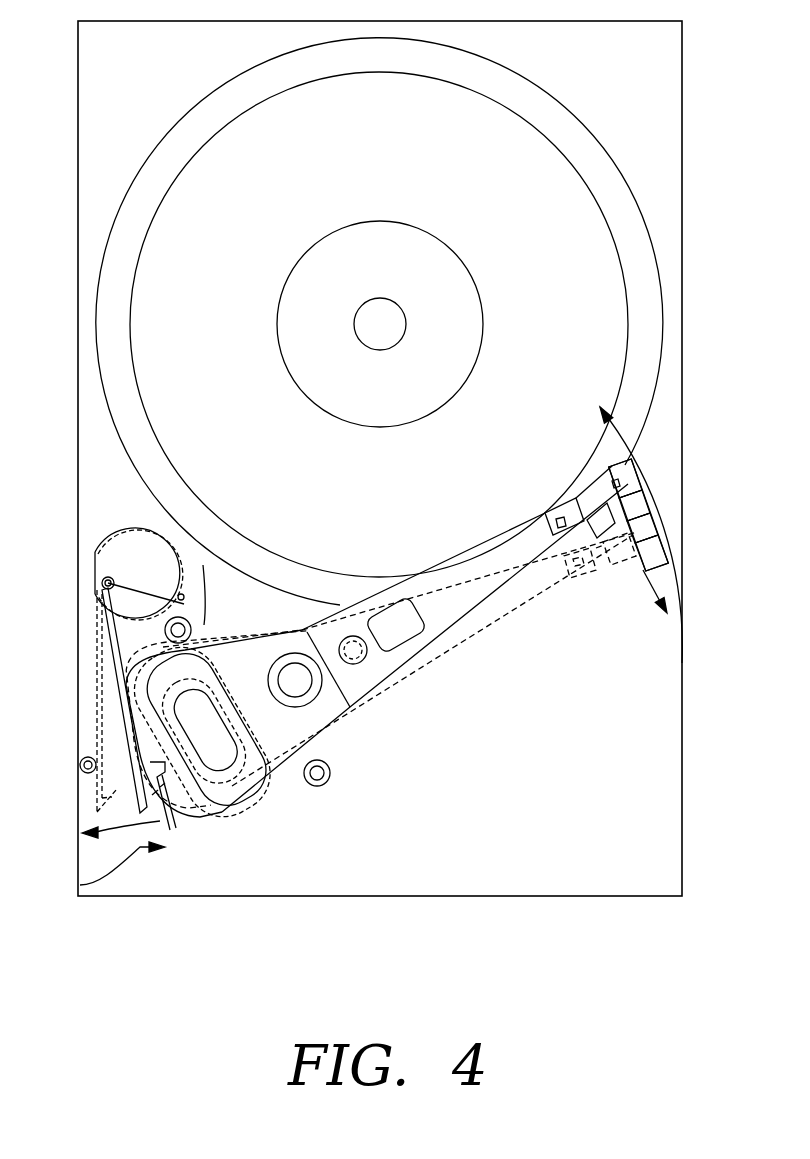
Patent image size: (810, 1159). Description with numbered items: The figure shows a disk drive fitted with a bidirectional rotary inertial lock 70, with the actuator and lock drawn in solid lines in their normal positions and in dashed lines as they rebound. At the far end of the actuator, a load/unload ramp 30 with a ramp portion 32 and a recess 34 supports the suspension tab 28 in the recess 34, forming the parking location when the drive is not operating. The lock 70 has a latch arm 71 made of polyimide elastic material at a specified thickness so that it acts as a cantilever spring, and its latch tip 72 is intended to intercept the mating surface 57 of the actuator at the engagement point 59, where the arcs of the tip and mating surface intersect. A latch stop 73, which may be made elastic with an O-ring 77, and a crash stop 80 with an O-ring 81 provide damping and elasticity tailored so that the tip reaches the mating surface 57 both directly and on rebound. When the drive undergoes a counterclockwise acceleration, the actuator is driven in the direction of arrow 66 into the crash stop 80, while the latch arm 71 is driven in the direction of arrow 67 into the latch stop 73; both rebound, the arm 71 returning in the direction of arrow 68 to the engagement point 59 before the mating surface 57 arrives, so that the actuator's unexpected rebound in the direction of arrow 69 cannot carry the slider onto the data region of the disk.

The suspension tab 28 is at (648, 537).
The load/unload ramp 30 is at (662, 558).
The ramp portion 32 is at (625, 474).
The recess 34 is at (648, 522).
The mating surface 57 is at (160, 787).
The engagement point 59 is at (152, 795).
The arrow 66 is at (675, 633).
The arrow 67 is at (132, 832).
The arrow 68 is at (80, 885).
The arrow 69 is at (636, 440).
The rotary inertial lock 70 is at (93, 556).
The latch arm 71 is at (116, 672).
The latch tip 72 is at (160, 822).
The latch stop 73 is at (84, 757).
The O-ring 77 is at (87, 773).
The crash stop 80 is at (168, 618).
The O-ring 81 is at (203, 565).